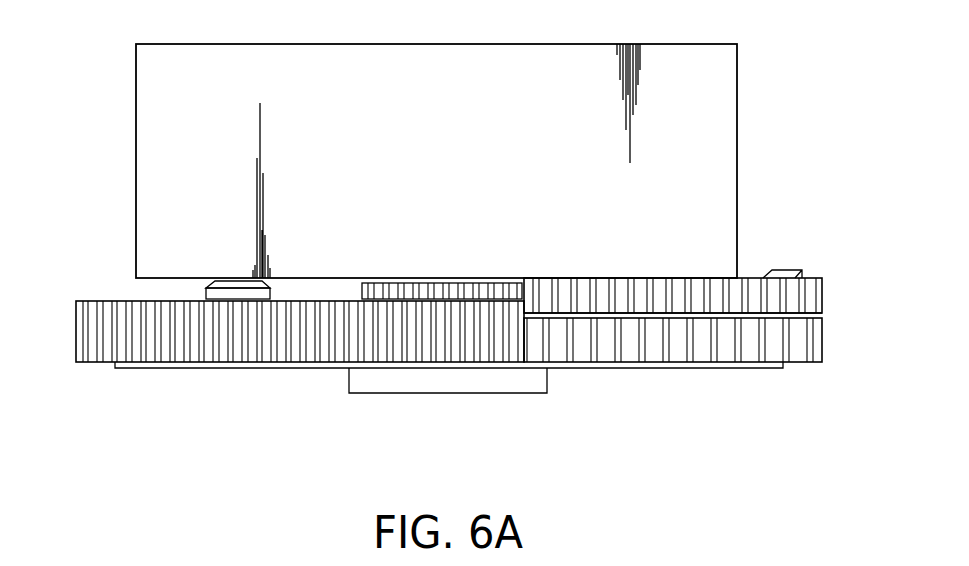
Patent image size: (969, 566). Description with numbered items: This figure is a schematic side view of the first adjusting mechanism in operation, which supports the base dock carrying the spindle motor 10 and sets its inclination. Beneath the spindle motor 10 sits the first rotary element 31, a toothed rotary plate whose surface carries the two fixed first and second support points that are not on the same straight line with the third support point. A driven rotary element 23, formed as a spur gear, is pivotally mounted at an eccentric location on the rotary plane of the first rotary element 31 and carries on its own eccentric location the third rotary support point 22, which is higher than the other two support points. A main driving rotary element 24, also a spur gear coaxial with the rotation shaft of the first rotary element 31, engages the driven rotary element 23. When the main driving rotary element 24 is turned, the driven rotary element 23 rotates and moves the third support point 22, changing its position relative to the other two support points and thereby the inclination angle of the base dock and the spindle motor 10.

The spindle motor 10 is at (714, 105).
The third rotary support point 22 is at (782, 270).
The driven rotary element 23 is at (800, 295).
The main driving rotary element 24 is at (372, 283).
The first rotary element 31 is at (780, 343).